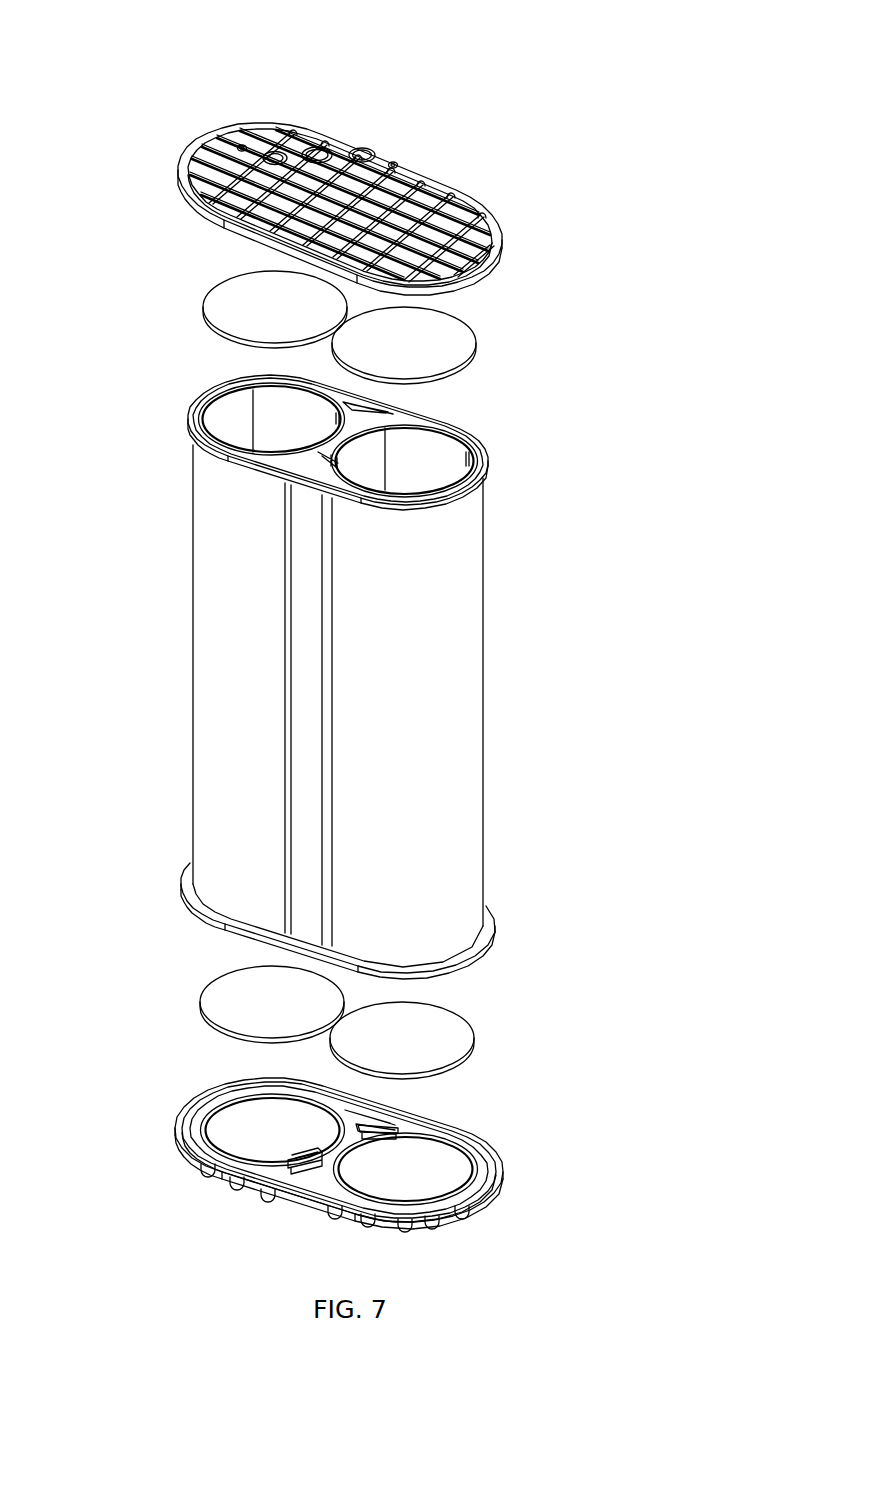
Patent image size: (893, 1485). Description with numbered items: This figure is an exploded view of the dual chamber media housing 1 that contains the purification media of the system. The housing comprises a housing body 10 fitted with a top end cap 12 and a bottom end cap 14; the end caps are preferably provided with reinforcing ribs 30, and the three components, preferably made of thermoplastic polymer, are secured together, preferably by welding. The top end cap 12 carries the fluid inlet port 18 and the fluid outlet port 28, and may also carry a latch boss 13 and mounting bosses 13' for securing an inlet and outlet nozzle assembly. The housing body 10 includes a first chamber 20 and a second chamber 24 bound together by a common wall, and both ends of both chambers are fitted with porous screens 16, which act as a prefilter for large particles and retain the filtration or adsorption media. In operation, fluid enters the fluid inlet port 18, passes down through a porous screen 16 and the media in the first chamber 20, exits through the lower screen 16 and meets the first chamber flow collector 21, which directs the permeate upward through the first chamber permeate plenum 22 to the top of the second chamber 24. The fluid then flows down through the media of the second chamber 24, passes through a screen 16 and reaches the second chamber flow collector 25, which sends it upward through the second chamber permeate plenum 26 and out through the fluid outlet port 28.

The dual chamber media housing 1 is at (485, 547).
The housing body 10 is at (404, 783).
The top end cap 12 is at (374, 209).
The latch boss 13 is at (289, 96).
The mounting boss 13' is at (299, 121).
The bottom end cap 14 is at (385, 1155).
The porous screen 16 is at (270, 329).
The fluid inlet port 18 is at (248, 115).
The first chamber 20 is at (212, 681).
The first chamber flow collector 21 is at (288, 1133).
The first chamber permeate plenum 22 is at (330, 462).
The second chamber 24 is at (465, 702).
The second chamber flow collector 25 is at (393, 1152).
The second chamber permeate plenum 26 is at (380, 416).
The fluid outlet port 28 is at (381, 118).
The reinforcing ribs 30 is at (299, 199).